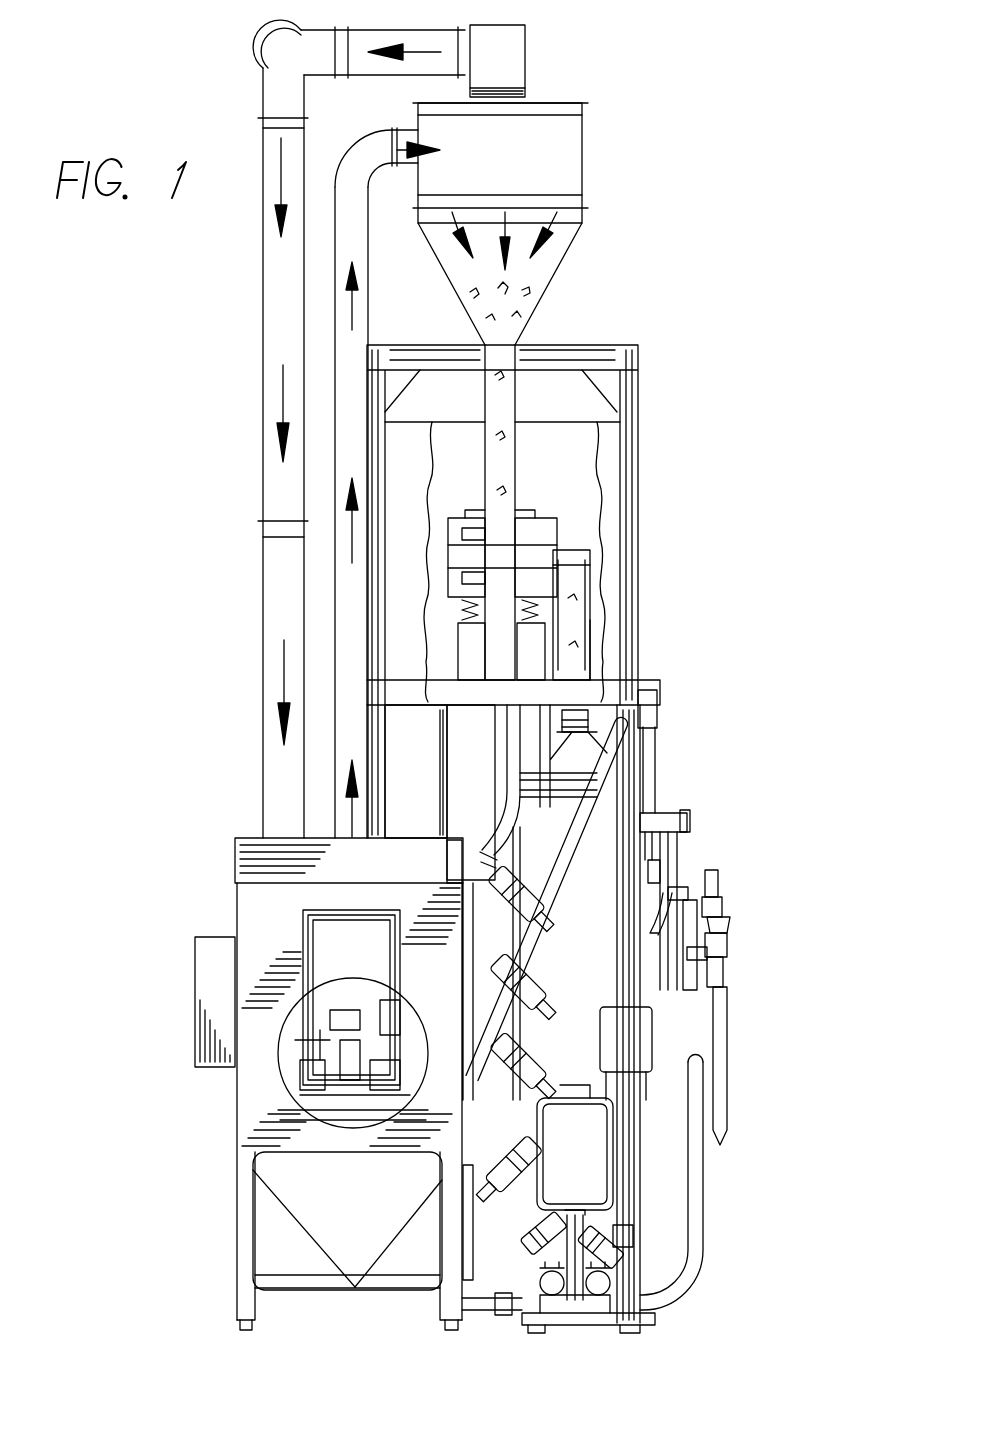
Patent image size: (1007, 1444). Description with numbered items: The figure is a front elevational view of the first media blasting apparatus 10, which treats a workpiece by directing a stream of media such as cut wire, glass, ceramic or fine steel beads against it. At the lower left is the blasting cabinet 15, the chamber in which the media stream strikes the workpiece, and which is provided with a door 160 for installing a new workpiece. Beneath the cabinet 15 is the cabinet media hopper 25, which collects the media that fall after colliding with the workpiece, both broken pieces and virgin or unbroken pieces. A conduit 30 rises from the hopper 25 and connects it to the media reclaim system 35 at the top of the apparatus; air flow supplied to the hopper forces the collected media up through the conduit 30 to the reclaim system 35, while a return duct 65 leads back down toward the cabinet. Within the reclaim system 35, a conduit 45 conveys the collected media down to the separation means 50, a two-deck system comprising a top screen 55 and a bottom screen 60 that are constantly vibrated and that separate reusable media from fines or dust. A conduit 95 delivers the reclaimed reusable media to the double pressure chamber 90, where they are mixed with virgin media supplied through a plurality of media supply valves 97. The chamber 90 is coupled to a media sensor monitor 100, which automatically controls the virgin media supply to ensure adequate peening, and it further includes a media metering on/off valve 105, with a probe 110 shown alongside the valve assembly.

The first media blasting apparatus 10 is at (205, 277).
The blasting cabinet 15 is at (237, 1103).
The cabinet media hopper 25 is at (283, 1205).
The conduit 30 is at (338, 605).
The media reclaim system 35 is at (593, 179).
The conduit 45 is at (517, 460).
The separation means 50 is at (440, 510).
The top screen 55 is at (557, 527).
The bottom screen 60 is at (553, 583).
The exhaust duct 65 is at (263, 497).
The double pressure chamber 90 is at (622, 728).
The conduit 95 is at (590, 635).
The media supply valves 97 is at (517, 1030).
The media sensor monitor 100 is at (630, 1290).
The media metering on/off valve 105 is at (633, 1223).
The probe 110 is at (732, 990).
The door 160 is at (473, 990).